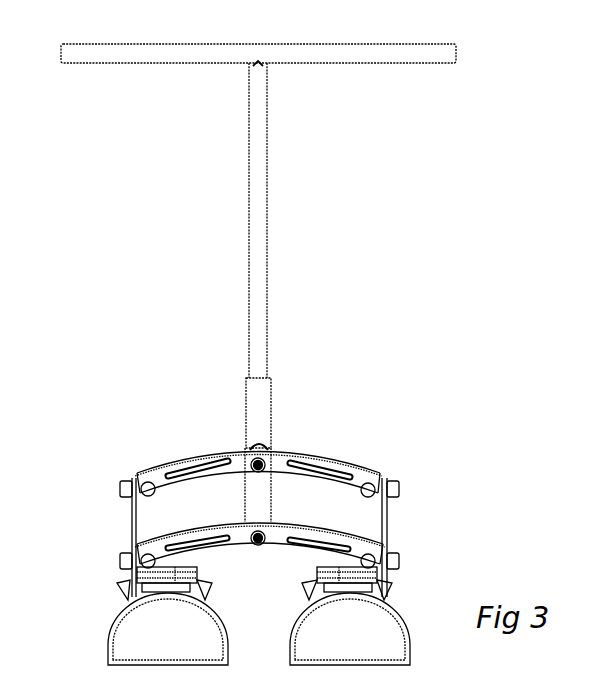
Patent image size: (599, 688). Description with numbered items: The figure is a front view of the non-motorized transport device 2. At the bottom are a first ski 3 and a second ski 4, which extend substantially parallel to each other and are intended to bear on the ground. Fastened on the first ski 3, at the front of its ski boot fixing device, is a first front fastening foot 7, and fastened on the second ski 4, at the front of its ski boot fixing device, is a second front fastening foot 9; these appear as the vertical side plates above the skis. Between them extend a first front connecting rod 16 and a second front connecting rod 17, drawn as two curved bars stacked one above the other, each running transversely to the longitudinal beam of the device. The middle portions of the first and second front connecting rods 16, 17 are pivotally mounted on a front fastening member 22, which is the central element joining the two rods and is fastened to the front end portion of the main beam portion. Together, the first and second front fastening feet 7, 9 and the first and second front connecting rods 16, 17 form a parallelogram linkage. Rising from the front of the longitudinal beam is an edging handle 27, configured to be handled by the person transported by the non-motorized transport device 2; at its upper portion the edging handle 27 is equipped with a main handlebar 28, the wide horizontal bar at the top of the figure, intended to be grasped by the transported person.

The non-motorized transport device 2 is at (378, 227).
The first ski 3 is at (136, 633).
The second ski 4 is at (386, 632).
The first front fastening foot 7 is at (131, 511).
The second front fastening foot 9 is at (388, 519).
The first front connecting rod 16 is at (236, 541).
The second front connecting rod 17 is at (240, 460).
The front fastening member 22 is at (262, 487).
The edging handle 27 is at (260, 247).
The main handlebar 28 is at (357, 53).